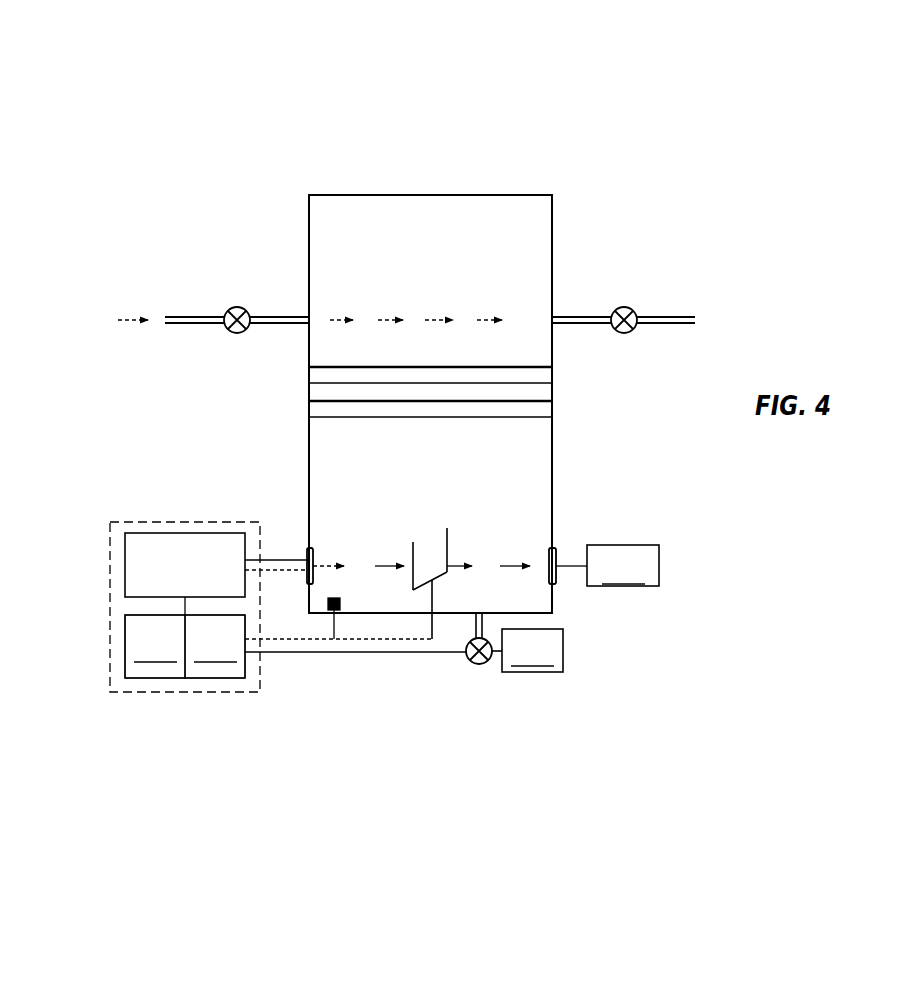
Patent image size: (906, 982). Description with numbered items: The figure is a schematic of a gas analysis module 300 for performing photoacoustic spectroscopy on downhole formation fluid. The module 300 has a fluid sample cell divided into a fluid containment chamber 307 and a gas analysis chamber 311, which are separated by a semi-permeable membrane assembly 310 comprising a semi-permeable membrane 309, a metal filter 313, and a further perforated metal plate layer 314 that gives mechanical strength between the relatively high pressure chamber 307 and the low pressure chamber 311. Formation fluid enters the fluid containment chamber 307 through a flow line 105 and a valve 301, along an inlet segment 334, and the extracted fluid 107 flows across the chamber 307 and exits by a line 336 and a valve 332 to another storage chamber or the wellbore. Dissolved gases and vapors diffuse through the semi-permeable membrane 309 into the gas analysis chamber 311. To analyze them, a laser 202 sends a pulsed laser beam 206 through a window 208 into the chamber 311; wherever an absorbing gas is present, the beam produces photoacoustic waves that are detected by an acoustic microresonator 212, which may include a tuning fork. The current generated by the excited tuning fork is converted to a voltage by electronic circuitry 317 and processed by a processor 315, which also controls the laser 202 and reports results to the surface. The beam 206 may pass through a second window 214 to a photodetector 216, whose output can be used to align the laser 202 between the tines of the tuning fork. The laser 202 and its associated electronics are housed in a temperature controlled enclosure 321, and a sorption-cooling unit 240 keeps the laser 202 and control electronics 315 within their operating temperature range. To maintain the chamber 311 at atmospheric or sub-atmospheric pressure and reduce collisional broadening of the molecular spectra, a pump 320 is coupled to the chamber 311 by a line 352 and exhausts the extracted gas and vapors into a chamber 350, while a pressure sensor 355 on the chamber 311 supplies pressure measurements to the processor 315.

The gas analysis module 300 is at (186, 52).
The semi-permeable membrane assembly 310 is at (522, 195).
The fluid containment chamber 307 is at (548, 264).
The semi-permeable membrane 309 is at (548, 376).
The metal filter 313 is at (310, 392).
The second layer 314 is at (548, 411).
The gas analysis chamber 311 is at (542, 484).
The flow line 105 is at (197, 326).
The valve 301 is at (237, 306).
The inlet pipe segment 334 is at (283, 326).
The extracted fluid 107 is at (395, 320).
The line 336 is at (572, 316).
The valve 332 is at (642, 313).
The laser 202 is at (110, 566).
The temperature controlled enclosure 321 is at (140, 692).
The electronic circuitry 317 is at (155, 646).
The processor 315 is at (215, 646).
The sorption-cooling unit 240 is at (140, 522).
The window 208 is at (308, 548).
The laser beam 206 is at (388, 566).
The acoustic microresonator 212 is at (446, 532).
The second window 214 is at (560, 548).
The photodetector 216 is at (623, 565).
The pressure sensor 355 is at (340, 610).
The line 352 is at (485, 623).
The pump 320 is at (480, 665).
The chamber 350 is at (532, 650).